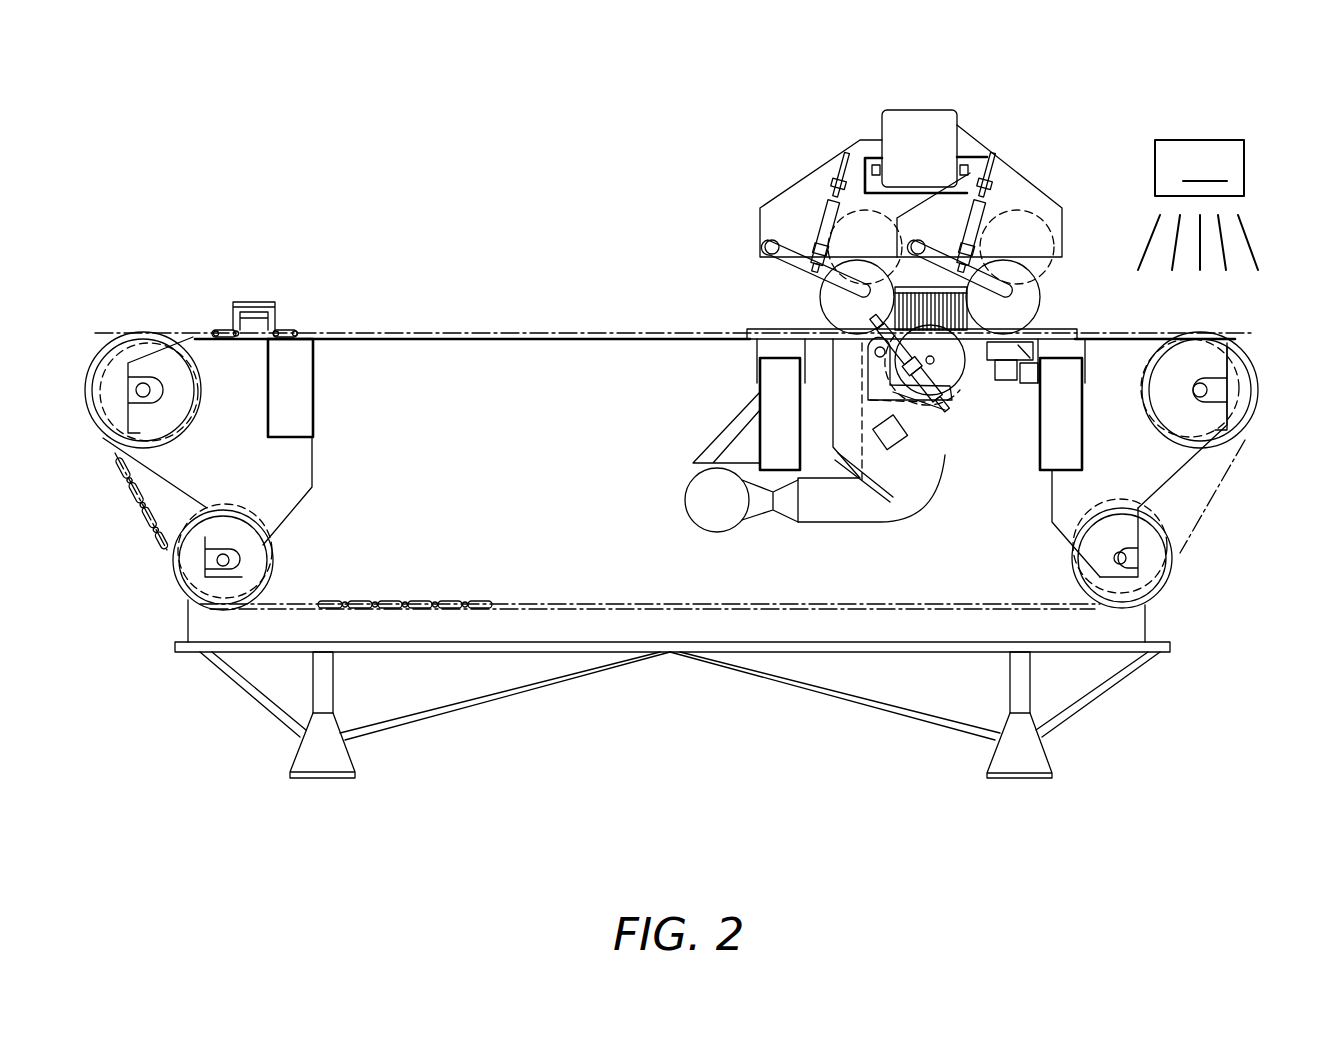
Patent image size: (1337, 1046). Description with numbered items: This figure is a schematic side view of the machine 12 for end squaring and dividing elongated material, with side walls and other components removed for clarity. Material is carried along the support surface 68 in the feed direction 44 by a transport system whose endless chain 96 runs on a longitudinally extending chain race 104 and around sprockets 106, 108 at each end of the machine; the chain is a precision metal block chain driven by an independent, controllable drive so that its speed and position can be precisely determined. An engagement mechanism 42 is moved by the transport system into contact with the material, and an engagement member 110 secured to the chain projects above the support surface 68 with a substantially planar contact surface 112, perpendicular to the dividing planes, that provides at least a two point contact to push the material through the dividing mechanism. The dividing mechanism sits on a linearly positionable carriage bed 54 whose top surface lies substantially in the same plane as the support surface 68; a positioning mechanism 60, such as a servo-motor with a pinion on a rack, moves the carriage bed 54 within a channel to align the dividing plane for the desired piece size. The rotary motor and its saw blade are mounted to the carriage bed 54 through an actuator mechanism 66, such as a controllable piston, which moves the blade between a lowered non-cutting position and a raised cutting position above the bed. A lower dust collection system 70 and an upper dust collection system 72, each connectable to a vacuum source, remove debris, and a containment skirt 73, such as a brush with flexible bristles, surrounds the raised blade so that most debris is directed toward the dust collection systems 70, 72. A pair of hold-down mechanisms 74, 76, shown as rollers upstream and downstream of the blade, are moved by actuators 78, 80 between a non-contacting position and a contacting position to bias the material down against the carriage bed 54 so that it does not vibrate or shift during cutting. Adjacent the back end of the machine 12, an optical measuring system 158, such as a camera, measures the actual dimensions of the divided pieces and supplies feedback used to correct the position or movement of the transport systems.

The machine 12 is at (230, 96).
The engagement mechanism 42 is at (210, 312).
The feed direction 44 is at (592, 188).
The carriage bed 54 is at (768, 328).
The positioning mechanism 60 is at (1050, 370).
The actuator mechanism 66 is at (943, 440).
The support surface 68 is at (602, 318).
The lower dust collection system 70 is at (835, 513).
The upper dust collection system 72 is at (947, 213).
The containment skirt 73 is at (995, 315).
The hold-down mechanism 74 is at (830, 297).
The hold-down mechanism 76 is at (1037, 237).
The actuator 78 is at (828, 210).
The actuator 80 is at (975, 205).
The second endless chain 96 is at (570, 610).
The chain race 104 is at (466, 360).
The sprocket 106 is at (103, 405).
The sprocket 108 is at (187, 563).
The engagement member 110 is at (245, 303).
The contact surface 112 is at (285, 314).
The optical measuring system 158 is at (1198, 205).